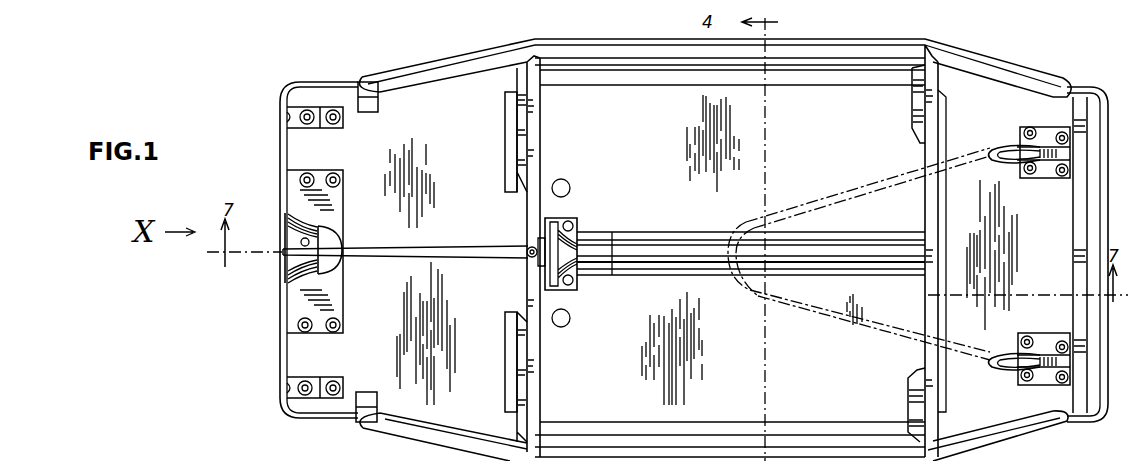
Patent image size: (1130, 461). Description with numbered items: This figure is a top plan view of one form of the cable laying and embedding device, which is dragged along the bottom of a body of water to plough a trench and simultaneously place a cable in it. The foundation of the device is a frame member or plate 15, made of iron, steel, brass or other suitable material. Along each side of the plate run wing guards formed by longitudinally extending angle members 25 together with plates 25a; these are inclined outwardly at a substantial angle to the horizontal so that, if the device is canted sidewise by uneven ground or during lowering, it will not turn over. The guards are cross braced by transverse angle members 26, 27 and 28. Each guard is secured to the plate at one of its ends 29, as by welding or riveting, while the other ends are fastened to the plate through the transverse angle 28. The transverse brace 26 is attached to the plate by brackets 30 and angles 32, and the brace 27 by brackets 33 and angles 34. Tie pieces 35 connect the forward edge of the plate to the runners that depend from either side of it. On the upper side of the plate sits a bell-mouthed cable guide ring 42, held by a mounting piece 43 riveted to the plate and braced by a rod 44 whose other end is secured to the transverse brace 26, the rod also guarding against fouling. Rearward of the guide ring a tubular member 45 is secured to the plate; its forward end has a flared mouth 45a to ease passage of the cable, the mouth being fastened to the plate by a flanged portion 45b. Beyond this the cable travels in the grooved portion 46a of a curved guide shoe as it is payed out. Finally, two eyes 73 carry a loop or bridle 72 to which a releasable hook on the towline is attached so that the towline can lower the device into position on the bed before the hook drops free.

The frame member or plate 15 is at (316, 86).
The longitudinally extending angle member 25 is at (637, 460).
The plate 25a is at (633, 63).
The transverse angle member 26 is at (535, 139).
The transverse angle member 27 is at (930, 152).
The transverse angle member 28 is at (1082, 197).
The end of guard 29 is at (376, 103).
The bracket 30 is at (521, 136).
The angle 32 is at (510, 108).
The bracket 33 is at (915, 108).
The angle 34 is at (945, 136).
The tie piece 35 is at (316, 120).
The cable guide ring 42 is at (292, 276).
The mounting piece 43 is at (300, 307).
The rod 44 is at (431, 257).
The tubular member 45 is at (673, 240).
The flared mouth 45a is at (576, 236).
The flanged portion 45b is at (562, 221).
The grooved portion 46a is at (536, 247).
The loop or bridle 72 is at (1000, 151).
The eye 73 is at (1041, 150).